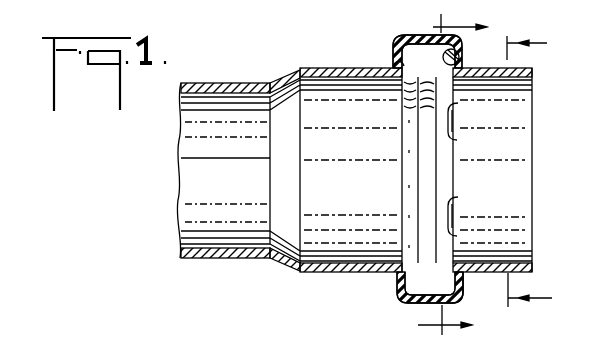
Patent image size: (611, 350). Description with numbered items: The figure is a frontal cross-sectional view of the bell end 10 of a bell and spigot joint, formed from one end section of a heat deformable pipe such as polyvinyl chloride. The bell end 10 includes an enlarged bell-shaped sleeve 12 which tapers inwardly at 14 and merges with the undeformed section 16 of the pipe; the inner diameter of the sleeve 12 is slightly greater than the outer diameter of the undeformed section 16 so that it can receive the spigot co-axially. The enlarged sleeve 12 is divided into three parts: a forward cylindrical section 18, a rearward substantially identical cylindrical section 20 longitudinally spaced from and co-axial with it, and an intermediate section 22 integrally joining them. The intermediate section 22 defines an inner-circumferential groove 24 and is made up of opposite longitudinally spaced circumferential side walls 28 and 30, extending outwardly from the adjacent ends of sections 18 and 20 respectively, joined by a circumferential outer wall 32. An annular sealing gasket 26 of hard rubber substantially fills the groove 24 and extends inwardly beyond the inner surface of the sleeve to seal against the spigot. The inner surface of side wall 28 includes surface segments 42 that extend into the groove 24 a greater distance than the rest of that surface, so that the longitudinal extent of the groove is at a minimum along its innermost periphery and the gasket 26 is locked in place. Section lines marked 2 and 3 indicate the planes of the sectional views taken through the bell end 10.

The bell end 10 is at (267, 46).
The enlarged bell-shaped sleeve 12 is at (323, 286).
The inward taper 14 is at (283, 265).
The undeformed section 16 is at (204, 254).
The forward cylindrical section 18 is at (530, 72).
The rearward cylindrical section 20 is at (357, 274).
The intermediate section 22 is at (481, 303).
The inner-circumferential groove 24 is at (402, 163).
The annular sealing gasket 26 is at (392, 65).
The circumferential side wall 28 is at (463, 57).
The circumferential side wall 30 is at (394, 40).
The circumferential outer wall 32 is at (421, 305).
The surface segments 42 is at (457, 136).
The section line 2- 2 is at (456, 177).
The section line 3- 3 is at (539, 171).